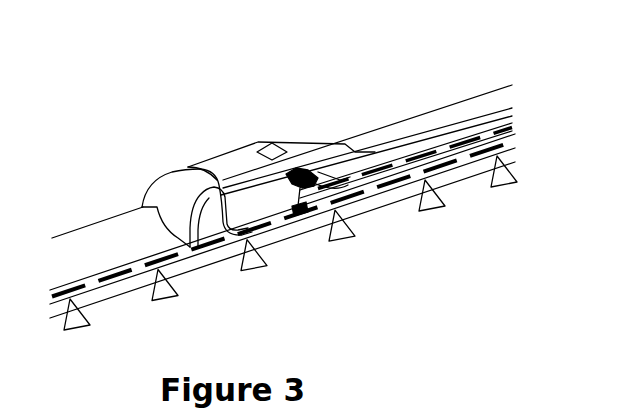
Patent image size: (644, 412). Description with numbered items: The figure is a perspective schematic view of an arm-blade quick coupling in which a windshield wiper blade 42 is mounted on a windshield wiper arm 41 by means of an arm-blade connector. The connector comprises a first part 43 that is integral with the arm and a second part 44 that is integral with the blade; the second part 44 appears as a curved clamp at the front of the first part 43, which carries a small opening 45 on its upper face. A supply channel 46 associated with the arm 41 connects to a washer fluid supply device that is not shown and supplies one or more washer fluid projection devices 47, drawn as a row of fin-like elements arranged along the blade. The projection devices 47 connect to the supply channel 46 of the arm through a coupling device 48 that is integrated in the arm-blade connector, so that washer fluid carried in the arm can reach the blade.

The windshield wiper arm 41 is at (463, 125).
The windshield wiper blade 42 is at (93, 245).
The first part 43 is at (231, 157).
The second part 44 is at (181, 203).
The window opening 45 is at (281, 147).
The supply channel 46 is at (509, 118).
The washer fluid projection devices 47 is at (444, 208).
The coupling device 48 is at (305, 192).